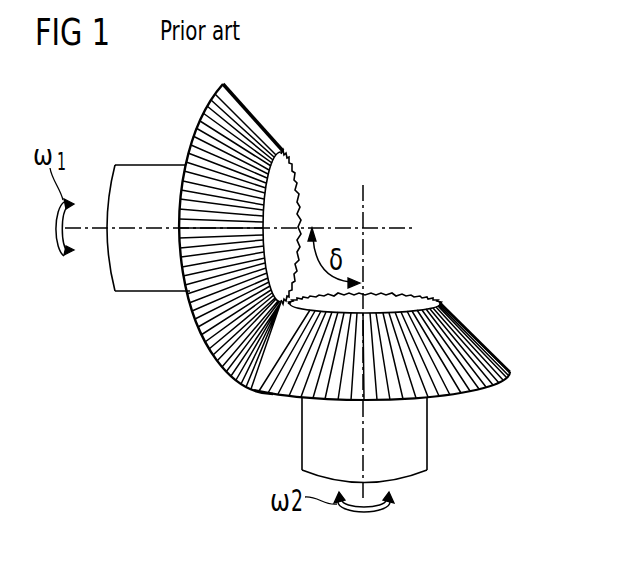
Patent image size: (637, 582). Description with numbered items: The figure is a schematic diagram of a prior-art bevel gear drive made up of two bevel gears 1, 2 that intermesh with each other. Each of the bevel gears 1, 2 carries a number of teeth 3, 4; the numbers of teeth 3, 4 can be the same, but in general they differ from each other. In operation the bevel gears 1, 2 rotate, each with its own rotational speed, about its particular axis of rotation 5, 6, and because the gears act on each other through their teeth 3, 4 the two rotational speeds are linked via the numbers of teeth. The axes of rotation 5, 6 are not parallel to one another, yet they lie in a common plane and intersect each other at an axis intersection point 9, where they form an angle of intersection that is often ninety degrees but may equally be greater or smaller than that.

The bevel gear 1 is at (150, 124).
The bevel gear 2 is at (473, 406).
The teeth 3 is at (184, 314).
The teeth 4 is at (245, 386).
The axis of rotation 5 is at (76, 232).
The axis of rotation 6 is at (361, 435).
The axis intersection point 9 is at (367, 226).